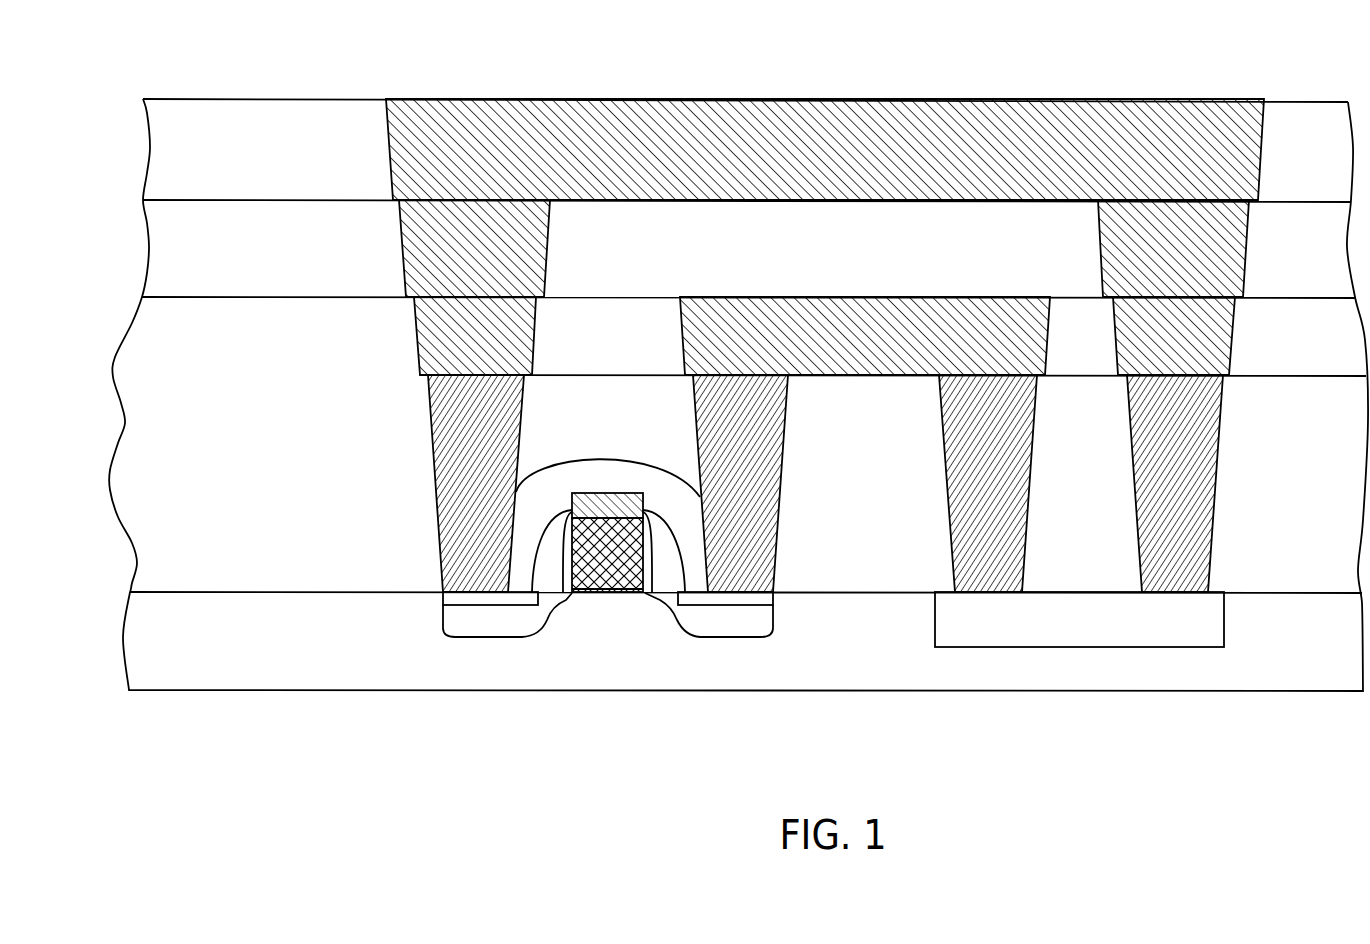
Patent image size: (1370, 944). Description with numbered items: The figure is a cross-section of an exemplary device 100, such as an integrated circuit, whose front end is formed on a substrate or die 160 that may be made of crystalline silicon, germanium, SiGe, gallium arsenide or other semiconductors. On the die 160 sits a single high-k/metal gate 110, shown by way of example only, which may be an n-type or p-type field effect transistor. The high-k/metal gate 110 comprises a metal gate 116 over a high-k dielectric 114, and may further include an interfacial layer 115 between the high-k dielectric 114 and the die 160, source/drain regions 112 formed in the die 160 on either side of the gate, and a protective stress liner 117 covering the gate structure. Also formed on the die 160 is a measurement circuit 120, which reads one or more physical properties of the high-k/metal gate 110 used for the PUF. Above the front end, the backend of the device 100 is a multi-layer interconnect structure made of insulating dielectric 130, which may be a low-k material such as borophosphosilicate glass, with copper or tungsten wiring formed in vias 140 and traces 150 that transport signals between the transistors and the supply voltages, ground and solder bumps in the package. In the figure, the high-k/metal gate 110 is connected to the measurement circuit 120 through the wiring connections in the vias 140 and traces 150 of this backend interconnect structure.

The device 100 is at (1214, 62).
The high-k/metal gate 110 is at (633, 702).
The source/drain regions 112 is at (457, 618).
The high-k dielectric 114 is at (623, 593).
The interfacial layer 115 is at (598, 593).
The metal gate 116 is at (625, 493).
The stress liner 117 is at (568, 478).
The measurement circuit 120 is at (1061, 629).
The dielectric 130 is at (612, 251).
The vias 140 is at (451, 427).
The traces 150 is at (799, 164).
The substrate or die 160 is at (171, 661).